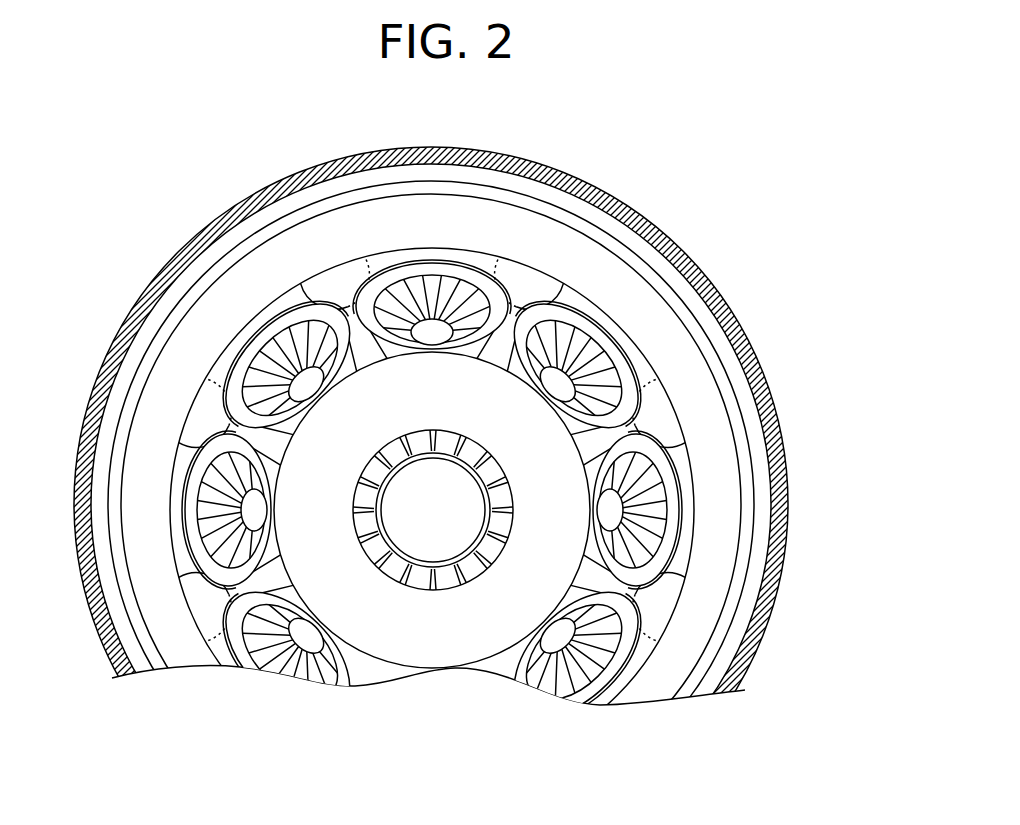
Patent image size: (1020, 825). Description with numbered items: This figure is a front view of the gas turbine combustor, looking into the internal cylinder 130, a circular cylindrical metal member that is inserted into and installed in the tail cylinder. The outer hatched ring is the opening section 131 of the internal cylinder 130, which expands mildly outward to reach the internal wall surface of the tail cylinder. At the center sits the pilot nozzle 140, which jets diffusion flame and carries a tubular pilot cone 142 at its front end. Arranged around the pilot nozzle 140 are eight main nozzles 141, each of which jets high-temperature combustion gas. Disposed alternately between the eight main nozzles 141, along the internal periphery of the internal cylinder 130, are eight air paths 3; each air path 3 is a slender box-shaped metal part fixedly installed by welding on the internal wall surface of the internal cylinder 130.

The air path 3 is at (335, 270).
The internal cylinder 130 is at (750, 527).
The opening section 131 is at (723, 494).
The pilot nozzle 140 is at (437, 532).
The main nozzle 141 is at (436, 252).
The pilot cone 142 is at (423, 642).